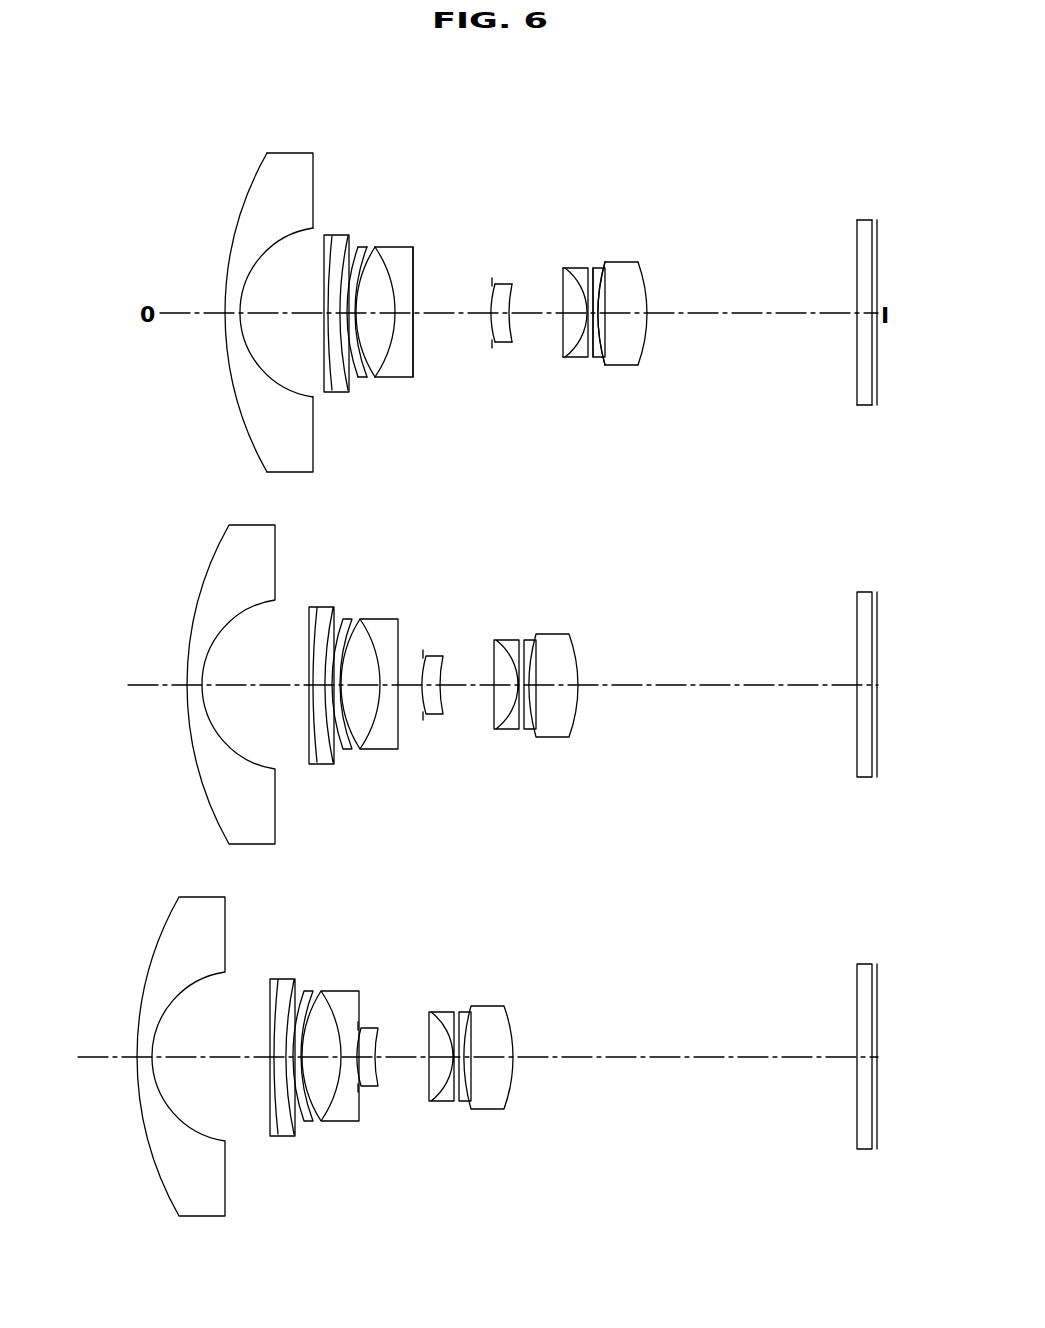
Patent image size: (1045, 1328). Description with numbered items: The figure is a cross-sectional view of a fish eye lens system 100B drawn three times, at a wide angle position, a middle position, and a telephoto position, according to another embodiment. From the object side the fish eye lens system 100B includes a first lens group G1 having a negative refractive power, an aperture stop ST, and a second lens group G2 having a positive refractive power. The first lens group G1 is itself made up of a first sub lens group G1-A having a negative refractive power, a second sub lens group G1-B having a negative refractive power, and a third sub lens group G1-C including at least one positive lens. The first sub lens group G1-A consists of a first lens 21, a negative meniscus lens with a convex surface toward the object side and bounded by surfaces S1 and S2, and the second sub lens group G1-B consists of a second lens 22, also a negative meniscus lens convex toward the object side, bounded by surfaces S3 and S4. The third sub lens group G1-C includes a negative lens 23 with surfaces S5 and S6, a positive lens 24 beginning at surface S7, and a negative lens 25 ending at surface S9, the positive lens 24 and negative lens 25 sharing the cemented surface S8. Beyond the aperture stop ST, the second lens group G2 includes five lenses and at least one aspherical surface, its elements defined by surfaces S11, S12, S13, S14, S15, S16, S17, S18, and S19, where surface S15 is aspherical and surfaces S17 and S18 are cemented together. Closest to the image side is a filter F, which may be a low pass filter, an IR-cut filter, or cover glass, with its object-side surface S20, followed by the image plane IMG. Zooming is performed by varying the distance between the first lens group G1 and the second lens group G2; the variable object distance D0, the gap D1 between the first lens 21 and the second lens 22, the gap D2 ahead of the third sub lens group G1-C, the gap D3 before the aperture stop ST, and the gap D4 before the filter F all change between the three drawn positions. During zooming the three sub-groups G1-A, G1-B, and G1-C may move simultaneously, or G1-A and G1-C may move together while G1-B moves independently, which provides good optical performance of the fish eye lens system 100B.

The fish eye lens system 100B is at (125, 181).
The first lens group G1 is at (417, 98).
The second lens group G2 is at (642, 98).
The (1-A)-th lens group G1-A is at (291, 153).
The (1-B)-th lens group G1-B is at (338, 233).
The (1-C)-th lens group G1-C is at (360, 241).
The first lens surface S1 is at (237, 403).
The second lens surface S2 is at (265, 362).
The third lens surface S3 is at (330, 335).
The fourth lens surface S4 is at (345, 338).
The fifth lens surface S5 is at (348, 340).
The sixth lens surface S6 is at (365, 345).
The seventh lens surface S7 is at (365, 355).
The eighth lens surface S8 is at (390, 347).
The ninth lens surface S9 is at (413, 328).
The aperture stop ST is at (492, 278).
The eleventh lens surface S11 is at (493, 342).
The twelfth lens surface S12 is at (512, 342).
The thirteenth lens surface S13 is at (561, 340).
The fourteenth lens surface S14 is at (585, 347).
The fifteenth lens surface S15 is at (589, 270).
The sixteenth lens surface S16 is at (606, 270).
The seventeenth lens surface S17 is at (607, 343).
The eighteenth lens surface S18 is at (642, 333).
The nineteenth lens surface S19 is at (857, 272).
The twentieth surface S20 is at (872, 245).
The filter F is at (861, 218).
The image plane IMG is at (878, 218).
The first lens 21 is at (210, 587).
The second lens 22 is at (325, 607).
The lens having a negative refractive power 23 is at (350, 620).
The lens having a positive refractive power 24 is at (368, 637).
The lens having a negative refractive power 25 is at (390, 623).
The object distance D0 is at (157, 685).
The variable distance D1 is at (252, 685).
The variable distance D2 is at (320, 688).
The variable distance D3 is at (405, 688).
The variable distance D4 is at (703, 688).